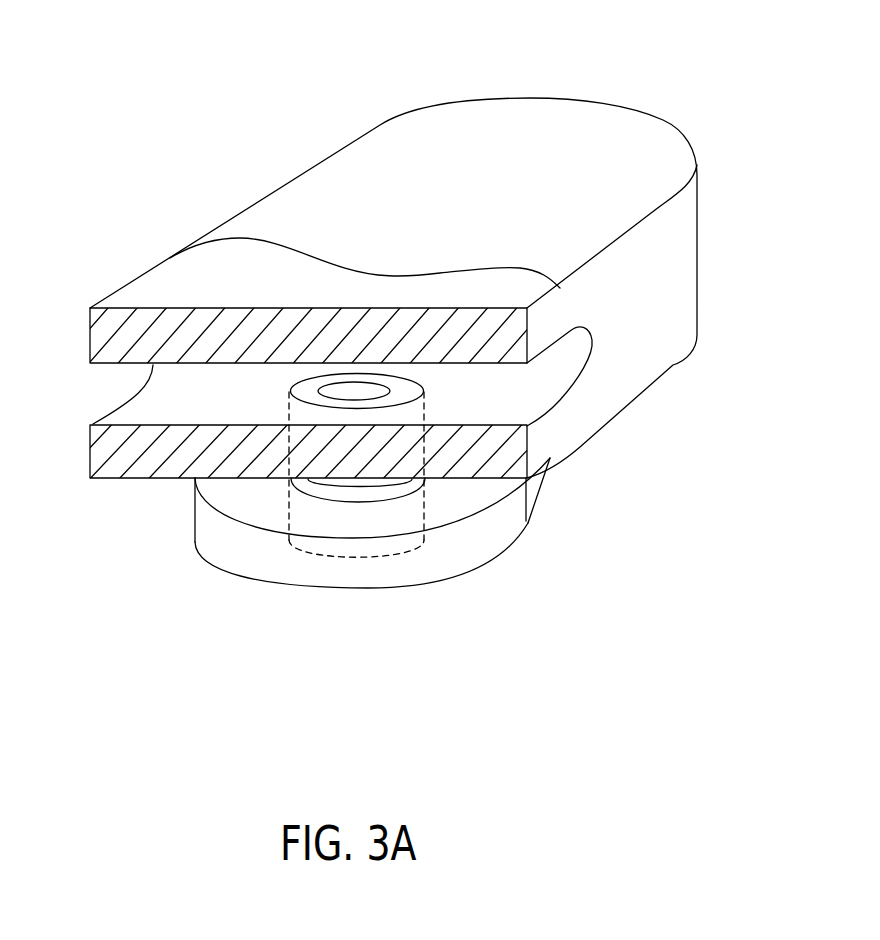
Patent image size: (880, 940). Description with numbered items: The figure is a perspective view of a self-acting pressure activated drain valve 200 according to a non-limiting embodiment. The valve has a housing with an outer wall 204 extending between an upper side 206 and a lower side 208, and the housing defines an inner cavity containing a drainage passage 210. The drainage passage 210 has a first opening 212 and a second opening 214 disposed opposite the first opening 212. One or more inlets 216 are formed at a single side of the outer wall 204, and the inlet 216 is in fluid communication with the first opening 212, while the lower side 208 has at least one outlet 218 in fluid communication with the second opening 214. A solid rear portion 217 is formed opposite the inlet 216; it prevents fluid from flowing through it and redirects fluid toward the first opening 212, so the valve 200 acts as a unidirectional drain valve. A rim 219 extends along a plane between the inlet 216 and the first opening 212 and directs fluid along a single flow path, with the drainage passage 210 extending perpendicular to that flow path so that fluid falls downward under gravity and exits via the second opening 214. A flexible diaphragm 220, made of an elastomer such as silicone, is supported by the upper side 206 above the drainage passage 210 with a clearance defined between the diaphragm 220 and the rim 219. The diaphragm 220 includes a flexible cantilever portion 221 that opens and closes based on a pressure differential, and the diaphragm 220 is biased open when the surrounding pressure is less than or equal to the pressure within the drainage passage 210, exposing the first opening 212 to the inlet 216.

The self-acting pressure activated drain valve 200 is at (115, 83).
The outer wall 204 is at (617, 355).
The upper side 206 is at (272, 212).
The lower side 208 is at (219, 567).
The drainage passage 210 is at (417, 490).
The first opening 212 is at (382, 390).
The second opening 214 is at (290, 536).
The inlet 216 is at (211, 390).
The solid rear portion 217 is at (680, 230).
The outlet 218 is at (365, 580).
The rim 219 is at (167, 413).
The flexible diaphragm 220 is at (443, 159).
The flexible cantilever portion 221 is at (228, 277).